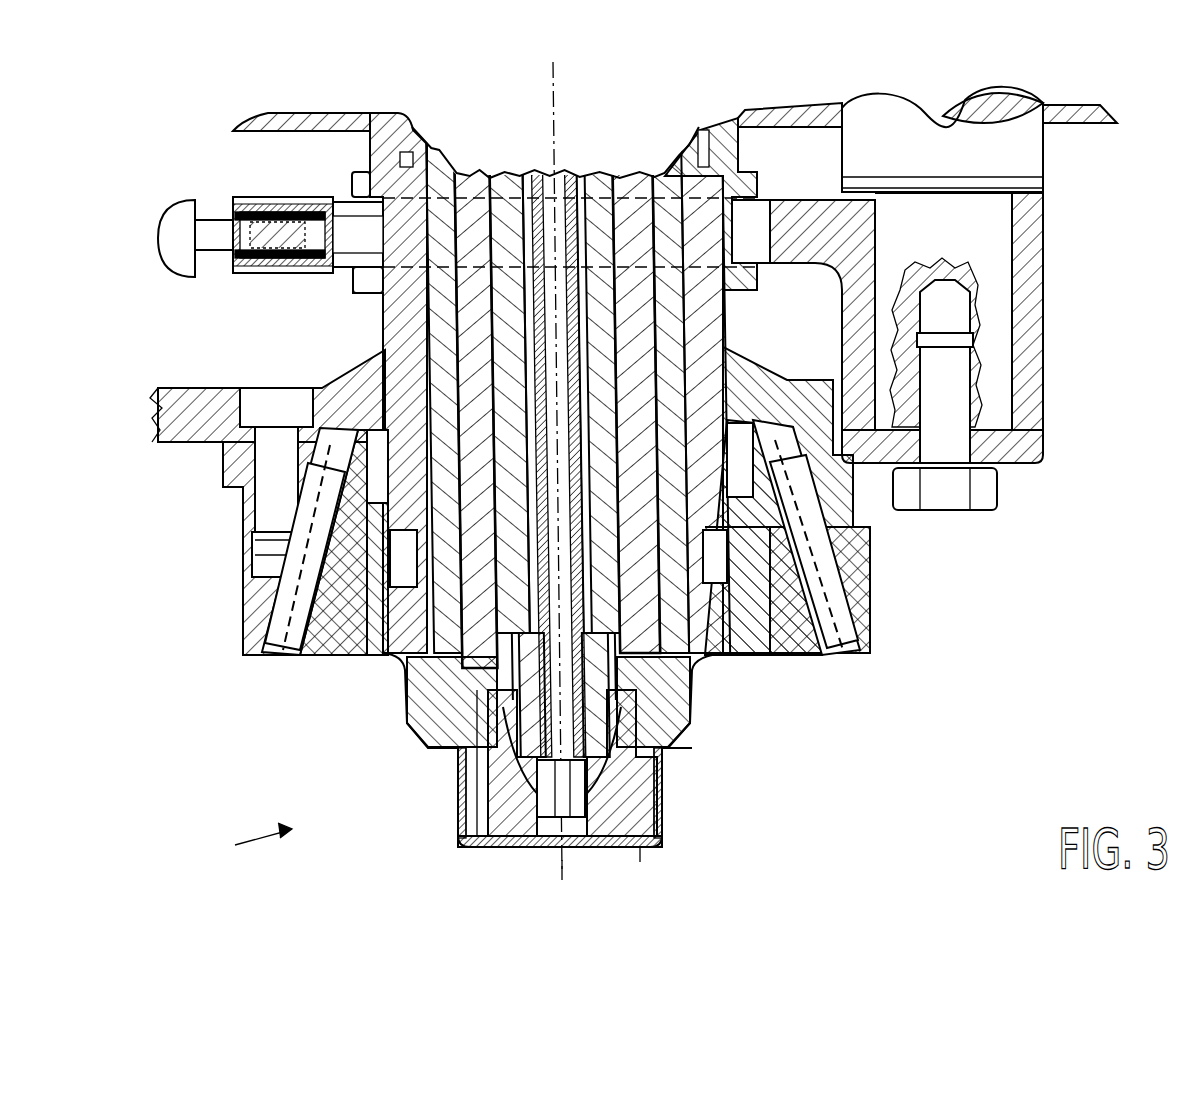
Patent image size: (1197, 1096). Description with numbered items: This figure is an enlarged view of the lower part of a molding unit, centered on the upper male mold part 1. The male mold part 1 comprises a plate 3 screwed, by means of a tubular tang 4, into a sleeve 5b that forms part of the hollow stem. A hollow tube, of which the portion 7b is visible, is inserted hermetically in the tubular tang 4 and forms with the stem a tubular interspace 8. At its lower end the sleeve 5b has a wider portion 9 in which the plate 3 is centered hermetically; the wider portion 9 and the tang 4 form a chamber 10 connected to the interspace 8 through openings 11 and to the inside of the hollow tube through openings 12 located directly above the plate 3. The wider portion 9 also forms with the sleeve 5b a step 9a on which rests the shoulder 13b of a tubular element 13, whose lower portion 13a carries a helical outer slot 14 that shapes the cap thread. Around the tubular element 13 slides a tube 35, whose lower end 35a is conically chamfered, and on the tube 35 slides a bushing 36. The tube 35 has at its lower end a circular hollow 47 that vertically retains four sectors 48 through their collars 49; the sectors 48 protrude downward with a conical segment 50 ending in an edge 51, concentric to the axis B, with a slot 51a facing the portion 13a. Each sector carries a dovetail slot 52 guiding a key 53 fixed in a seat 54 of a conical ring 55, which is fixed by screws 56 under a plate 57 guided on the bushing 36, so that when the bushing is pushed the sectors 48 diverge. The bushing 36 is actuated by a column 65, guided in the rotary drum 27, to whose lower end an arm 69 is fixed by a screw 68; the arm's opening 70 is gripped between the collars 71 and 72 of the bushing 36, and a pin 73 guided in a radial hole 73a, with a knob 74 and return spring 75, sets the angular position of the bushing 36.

The upper male mold part 1 is at (251, 841).
The plate 3 is at (590, 855).
The tubular tang 4 is at (652, 780).
The sleeve 5b is at (592, 185).
The hollow tube portion 7b is at (592, 188).
The tubular interspace 8 is at (535, 180).
The wider portion 9 is at (642, 852).
The step 9a is at (712, 668).
The chamber 10 is at (625, 752).
The openings 11 is at (680, 720).
The openings 12 is at (510, 848).
The tubular element 13 is at (638, 172).
The lower portion 13a is at (640, 760).
The shoulder 13b is at (470, 672).
The helical outer slot 14 is at (657, 795).
The rotary drum 27 is at (275, 125).
The tube 35 is at (434, 140).
The lower end of the tube 35a is at (440, 745).
The bushing 36 is at (722, 135).
The circular hollow 47 is at (335, 630).
The sectors 48 is at (795, 602).
The collars 49 is at (715, 548).
The conical segment 50 is at (420, 715).
The edge 51 is at (455, 748).
The slot 51a is at (455, 762).
The dovetail slot 52 is at (275, 660).
The keys 53 is at (292, 612).
The seats 54 is at (262, 635).
The conical ring 55 is at (250, 575).
The screws 56 is at (265, 400).
The plate 57 is at (355, 385).
The column 65 is at (1032, 145).
The screw 68 is at (990, 492).
The arm 69 is at (820, 225).
The opening 70 is at (762, 265).
The collar 71 is at (360, 175).
The collar 72 is at (360, 282).
The pin 73 is at (216, 240).
The radial hole 73a is at (318, 205).
The knob 74 is at (175, 222).
The return spring 75 is at (275, 265).
The axis B is at (551, 90).